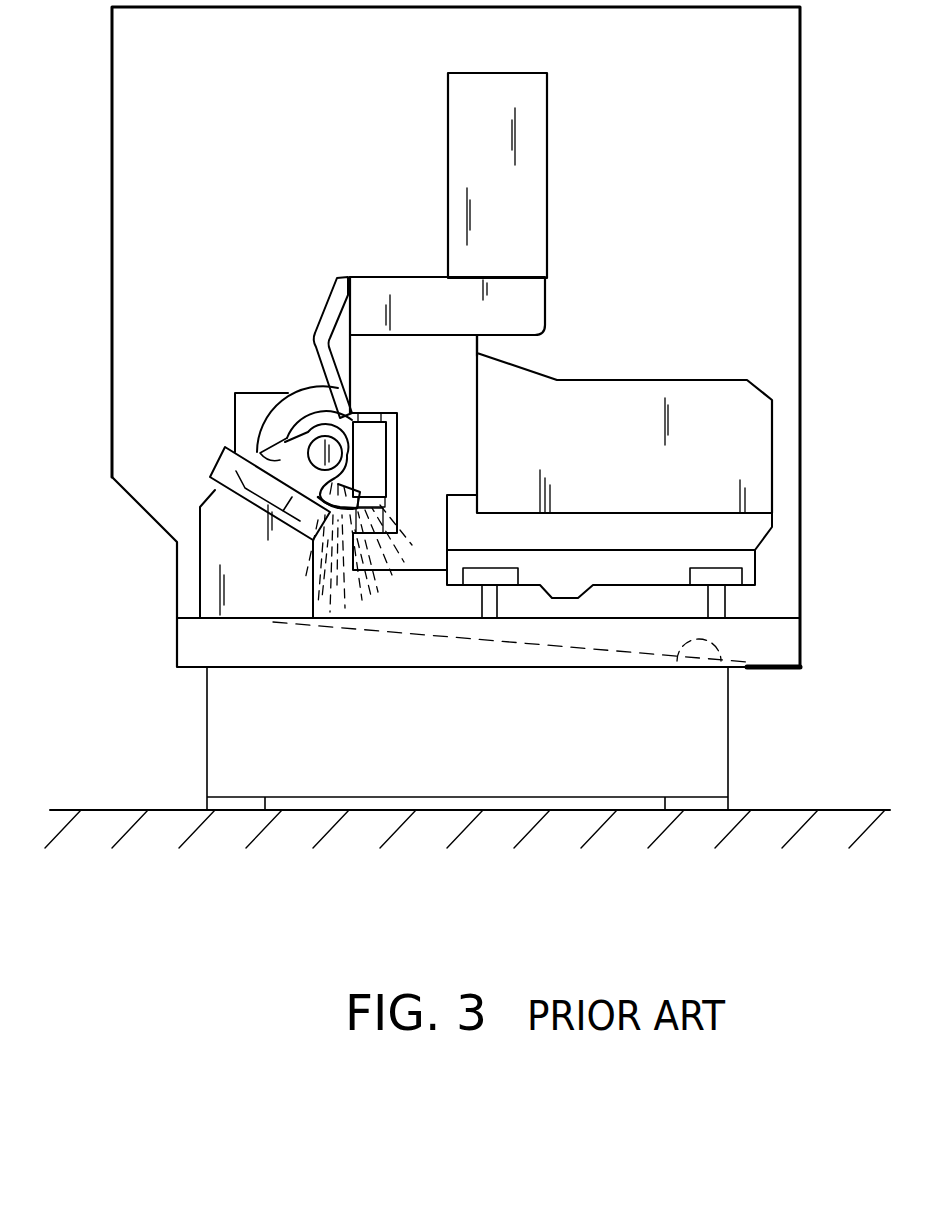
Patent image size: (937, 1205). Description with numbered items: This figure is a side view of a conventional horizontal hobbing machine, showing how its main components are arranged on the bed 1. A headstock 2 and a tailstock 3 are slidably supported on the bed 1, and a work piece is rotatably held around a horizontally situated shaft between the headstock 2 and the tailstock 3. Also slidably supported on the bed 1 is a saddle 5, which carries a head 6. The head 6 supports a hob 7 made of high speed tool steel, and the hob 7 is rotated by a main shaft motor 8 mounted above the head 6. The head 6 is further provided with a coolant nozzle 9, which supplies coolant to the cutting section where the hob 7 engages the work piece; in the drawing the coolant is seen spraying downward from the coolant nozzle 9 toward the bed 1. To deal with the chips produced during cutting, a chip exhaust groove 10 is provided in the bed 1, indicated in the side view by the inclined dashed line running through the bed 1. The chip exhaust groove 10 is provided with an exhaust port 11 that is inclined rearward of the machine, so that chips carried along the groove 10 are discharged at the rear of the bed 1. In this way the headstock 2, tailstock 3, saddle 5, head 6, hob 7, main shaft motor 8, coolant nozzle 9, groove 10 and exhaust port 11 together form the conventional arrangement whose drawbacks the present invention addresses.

The bed 1 is at (200, 648).
The headstock 2 is at (241, 407).
The tailstock 3 is at (280, 458).
The saddle 5 is at (707, 410).
The head 6 is at (458, 350).
The hob 7 is at (383, 460).
The main shaft motor 8 is at (478, 95).
The coolant nozzle 9 is at (333, 290).
The chip exhaust groove 10 is at (730, 668).
The exhaust port 11 is at (782, 672).